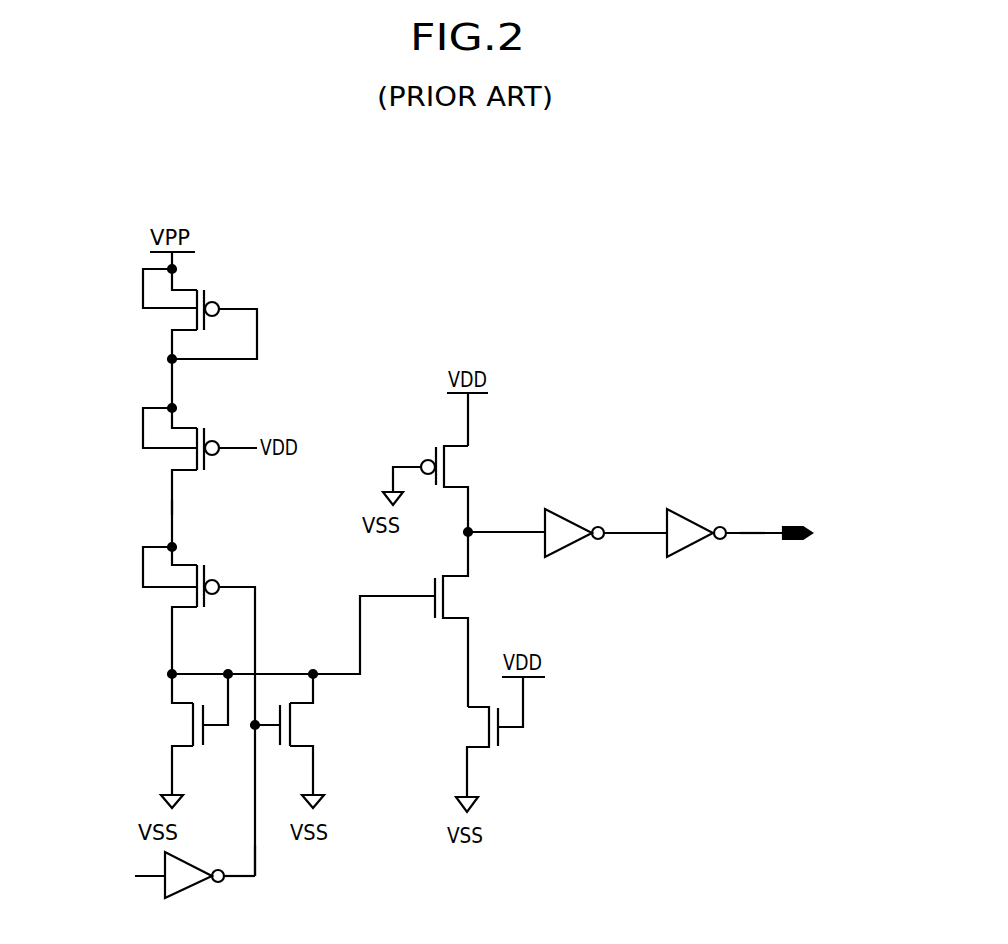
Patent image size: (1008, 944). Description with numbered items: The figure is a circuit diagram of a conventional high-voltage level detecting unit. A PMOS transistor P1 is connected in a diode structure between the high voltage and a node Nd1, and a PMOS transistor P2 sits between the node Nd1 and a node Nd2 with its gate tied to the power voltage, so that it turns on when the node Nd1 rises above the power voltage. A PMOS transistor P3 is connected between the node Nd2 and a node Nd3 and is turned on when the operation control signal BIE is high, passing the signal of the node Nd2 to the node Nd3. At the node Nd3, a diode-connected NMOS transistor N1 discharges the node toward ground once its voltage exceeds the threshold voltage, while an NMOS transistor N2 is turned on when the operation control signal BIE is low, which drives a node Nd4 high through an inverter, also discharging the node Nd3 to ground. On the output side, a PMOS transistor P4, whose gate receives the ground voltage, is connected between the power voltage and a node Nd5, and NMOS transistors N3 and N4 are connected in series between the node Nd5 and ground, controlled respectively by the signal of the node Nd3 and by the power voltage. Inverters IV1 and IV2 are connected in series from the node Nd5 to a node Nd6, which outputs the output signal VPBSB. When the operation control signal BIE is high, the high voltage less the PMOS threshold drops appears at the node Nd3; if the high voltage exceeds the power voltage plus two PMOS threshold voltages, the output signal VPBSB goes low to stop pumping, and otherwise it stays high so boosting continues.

The PMOS transistor P1 is at (200, 312).
The PMOS transistor P2 is at (200, 453).
The PMOS transistor P3 is at (199, 709).
The PMOS transistor P4 is at (441, 489).
The NMOS transistor N1 is at (194, 741).
The NMOS transistor N2 is at (297, 741).
The NMOS transistor N3 is at (467, 619).
The NMOS transistor N4 is at (491, 744).
The inverter IV1 is at (606, 545).
The inverter IV2 is at (725, 545).
The node Nd1 is at (172, 359).
The node Nd2 is at (172, 508).
The node Nd3 is at (172, 674).
The node Nd4 is at (255, 853).
The node Nd5 is at (468, 532).
The node Nd6 is at (752, 533).
The operation control signal BIE is at (176, 875).
The output signal VPBSB is at (833, 535).